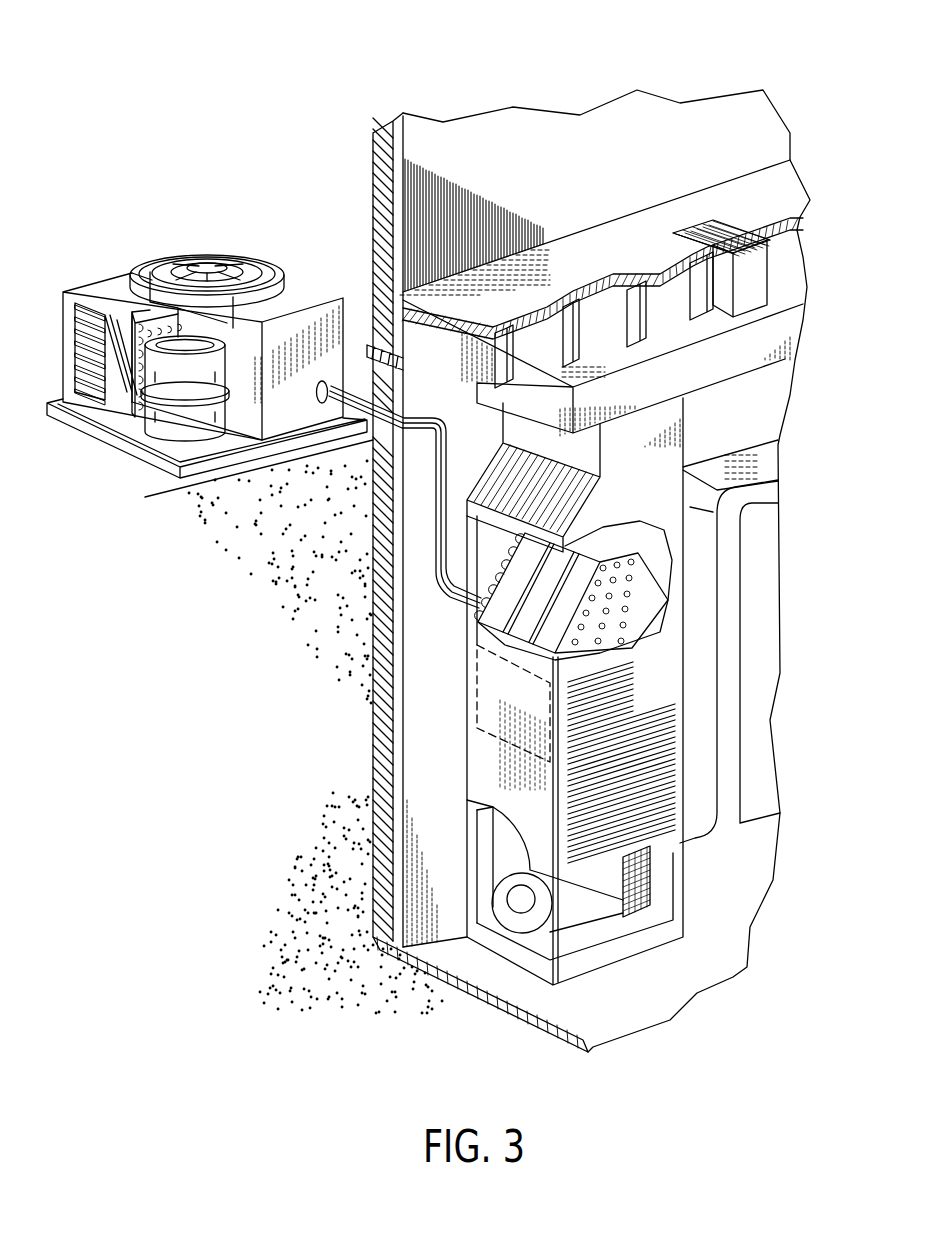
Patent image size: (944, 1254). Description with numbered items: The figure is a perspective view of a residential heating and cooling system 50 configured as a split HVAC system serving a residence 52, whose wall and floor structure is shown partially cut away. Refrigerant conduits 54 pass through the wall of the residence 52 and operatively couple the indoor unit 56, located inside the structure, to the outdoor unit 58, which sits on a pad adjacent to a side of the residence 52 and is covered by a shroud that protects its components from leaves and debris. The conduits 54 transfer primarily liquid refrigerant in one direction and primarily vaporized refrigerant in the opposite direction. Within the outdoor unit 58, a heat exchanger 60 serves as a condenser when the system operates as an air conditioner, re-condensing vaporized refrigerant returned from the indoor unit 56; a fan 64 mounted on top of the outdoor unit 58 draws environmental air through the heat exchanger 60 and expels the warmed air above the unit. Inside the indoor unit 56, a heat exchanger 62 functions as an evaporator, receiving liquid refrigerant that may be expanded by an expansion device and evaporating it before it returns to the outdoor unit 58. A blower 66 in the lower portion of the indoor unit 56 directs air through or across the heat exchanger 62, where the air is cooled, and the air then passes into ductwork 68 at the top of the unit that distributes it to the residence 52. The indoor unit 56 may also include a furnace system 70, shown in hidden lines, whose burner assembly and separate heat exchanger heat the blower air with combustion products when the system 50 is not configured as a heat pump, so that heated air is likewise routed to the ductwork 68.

The residential heating and cooling system 50 is at (207, 87).
The residence 52 is at (503, 137).
The refrigerant conduits 54 is at (433, 507).
The indoor unit 56 is at (447, 743).
The outdoor unit 58 is at (167, 248).
The heat exchanger 60 is at (140, 325).
The heat exchanger 62 is at (527, 620).
The fan 64 is at (223, 260).
The blower 66 is at (517, 927).
The ductwork 68 is at (727, 357).
The furnace system 70 is at (490, 688).